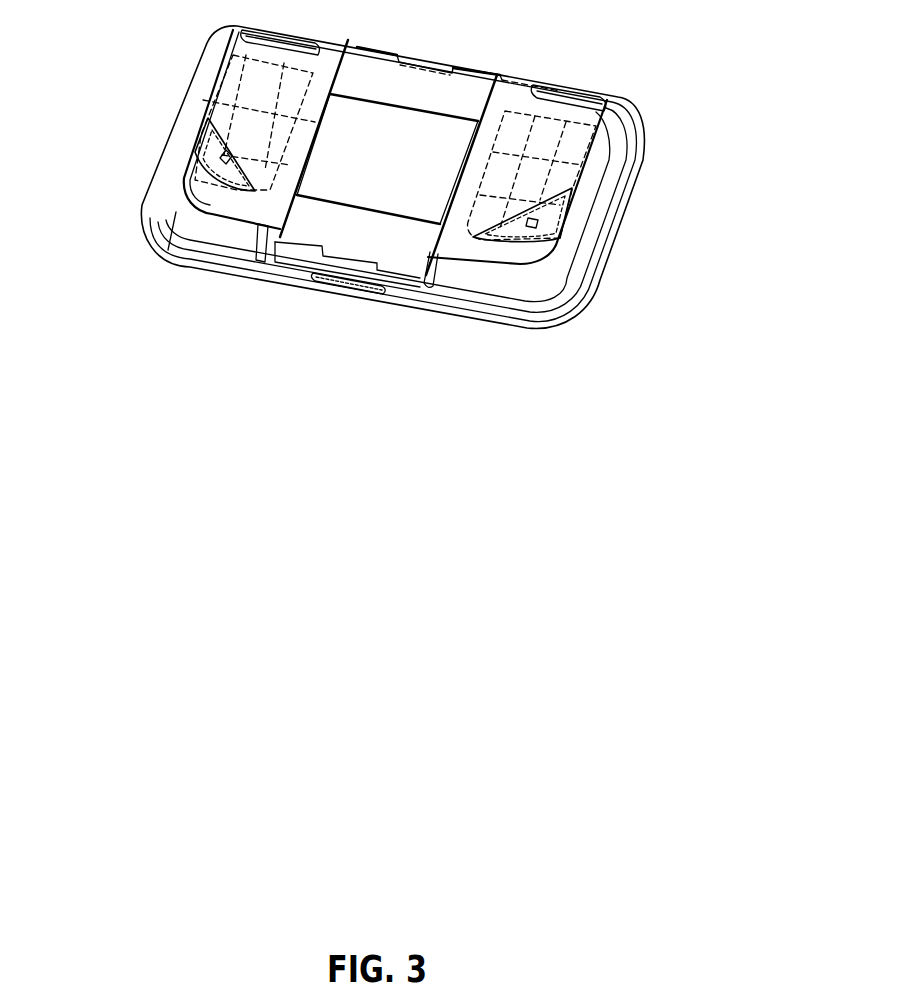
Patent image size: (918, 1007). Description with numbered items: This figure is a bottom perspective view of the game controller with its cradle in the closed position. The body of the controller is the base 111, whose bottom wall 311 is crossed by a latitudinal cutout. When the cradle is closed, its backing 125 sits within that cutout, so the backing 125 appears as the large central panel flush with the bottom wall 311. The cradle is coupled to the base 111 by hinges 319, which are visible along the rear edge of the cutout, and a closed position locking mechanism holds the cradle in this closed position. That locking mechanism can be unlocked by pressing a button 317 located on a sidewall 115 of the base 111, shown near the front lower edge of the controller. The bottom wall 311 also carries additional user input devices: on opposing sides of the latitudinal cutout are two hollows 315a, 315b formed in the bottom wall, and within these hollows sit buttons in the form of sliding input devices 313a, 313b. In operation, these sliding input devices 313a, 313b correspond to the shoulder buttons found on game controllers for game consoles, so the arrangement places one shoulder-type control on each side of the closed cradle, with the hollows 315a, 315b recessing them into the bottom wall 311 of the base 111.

The base 111 is at (641, 125).
The sidewall 115 is at (580, 303).
The backing 125 is at (402, 178).
The bottom wall 311 is at (267, 210).
The sliding input device 313a is at (198, 165).
The sliding input device 313b is at (545, 222).
The hollow 315a is at (247, 124).
The hollow 315b is at (528, 170).
The button 317 is at (357, 290).
The hinges 319 is at (466, 70).